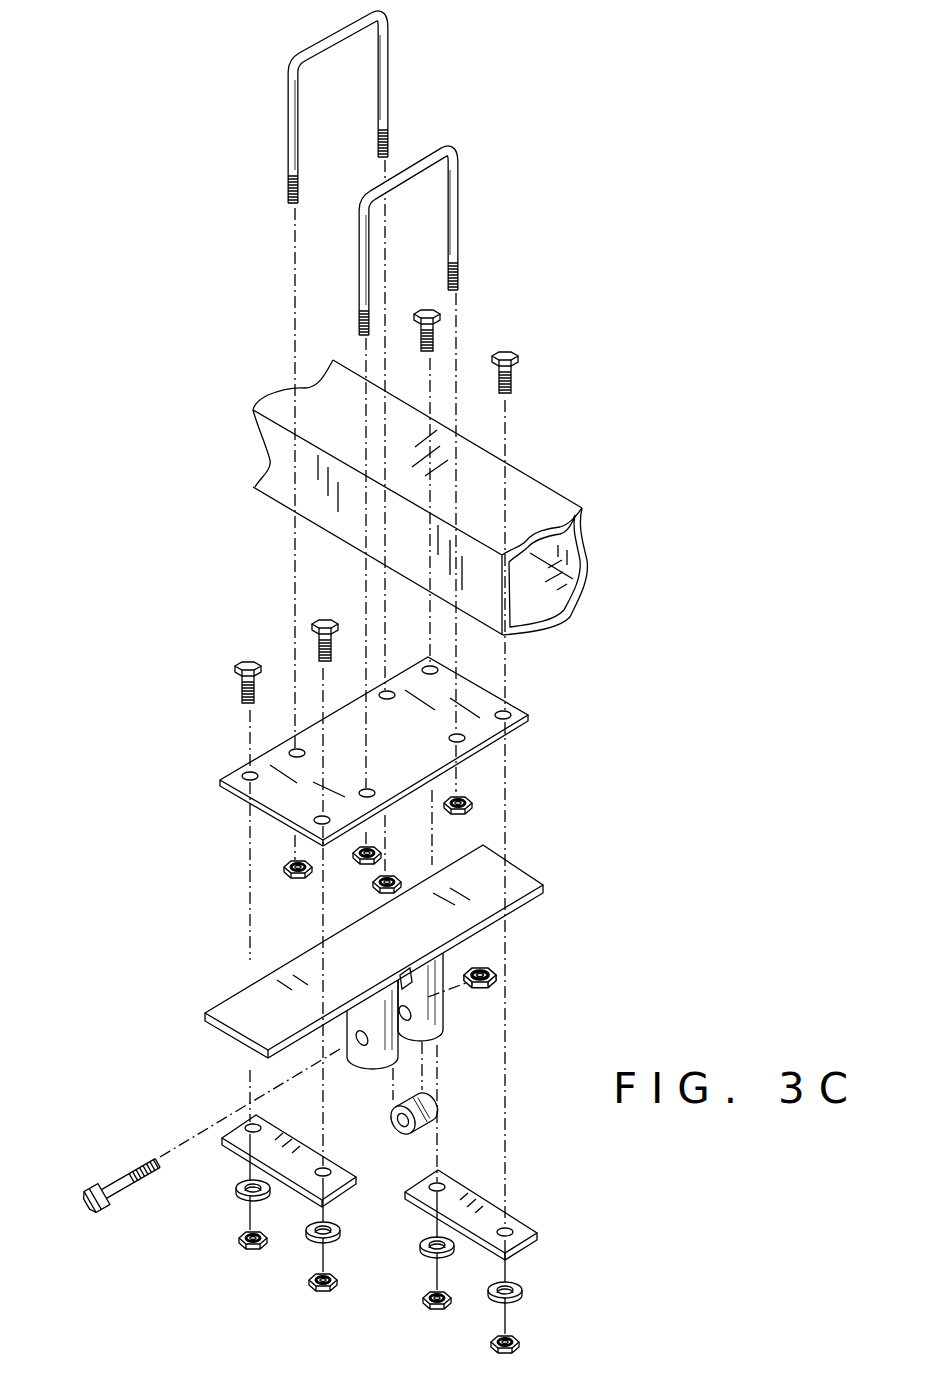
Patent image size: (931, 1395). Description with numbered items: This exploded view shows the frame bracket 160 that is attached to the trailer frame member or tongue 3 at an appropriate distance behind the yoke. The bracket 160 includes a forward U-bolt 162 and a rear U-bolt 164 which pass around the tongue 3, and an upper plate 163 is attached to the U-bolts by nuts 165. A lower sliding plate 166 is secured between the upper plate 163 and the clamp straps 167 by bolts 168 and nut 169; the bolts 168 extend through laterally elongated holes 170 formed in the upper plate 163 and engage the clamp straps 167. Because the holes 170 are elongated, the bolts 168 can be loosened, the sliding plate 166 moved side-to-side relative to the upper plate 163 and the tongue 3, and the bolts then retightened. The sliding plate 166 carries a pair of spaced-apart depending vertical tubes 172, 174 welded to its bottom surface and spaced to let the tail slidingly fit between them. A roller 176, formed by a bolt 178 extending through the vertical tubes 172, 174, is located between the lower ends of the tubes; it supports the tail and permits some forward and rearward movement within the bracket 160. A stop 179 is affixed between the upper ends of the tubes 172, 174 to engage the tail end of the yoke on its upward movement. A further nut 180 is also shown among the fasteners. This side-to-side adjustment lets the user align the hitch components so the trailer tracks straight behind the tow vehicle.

The frame bracket 160 is at (235, 378).
The forward U-bolt 162 is at (382, 50).
The rear U-bolt 164 is at (458, 192).
The trailer frame member or tongue 3 is at (512, 500).
The bolts 168 is at (322, 617).
The upper plate 163 is at (362, 751).
The laterally elongated holes 170 is at (245, 775).
The nuts 165 is at (470, 803).
The lower sliding plate 166 is at (473, 880).
The nut 180 is at (492, 972).
The stop 179 is at (410, 982).
The vertical tube 174 is at (437, 1025).
The vertical tube 172 is at (368, 1053).
The roller 176 is at (425, 1112).
The bolt 178 is at (123, 1175).
The clamp straps 167 is at (335, 1168).
The nut 169 is at (257, 1255).